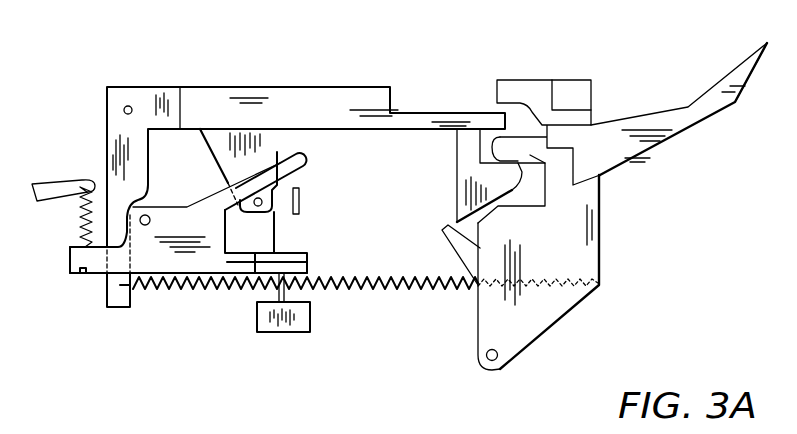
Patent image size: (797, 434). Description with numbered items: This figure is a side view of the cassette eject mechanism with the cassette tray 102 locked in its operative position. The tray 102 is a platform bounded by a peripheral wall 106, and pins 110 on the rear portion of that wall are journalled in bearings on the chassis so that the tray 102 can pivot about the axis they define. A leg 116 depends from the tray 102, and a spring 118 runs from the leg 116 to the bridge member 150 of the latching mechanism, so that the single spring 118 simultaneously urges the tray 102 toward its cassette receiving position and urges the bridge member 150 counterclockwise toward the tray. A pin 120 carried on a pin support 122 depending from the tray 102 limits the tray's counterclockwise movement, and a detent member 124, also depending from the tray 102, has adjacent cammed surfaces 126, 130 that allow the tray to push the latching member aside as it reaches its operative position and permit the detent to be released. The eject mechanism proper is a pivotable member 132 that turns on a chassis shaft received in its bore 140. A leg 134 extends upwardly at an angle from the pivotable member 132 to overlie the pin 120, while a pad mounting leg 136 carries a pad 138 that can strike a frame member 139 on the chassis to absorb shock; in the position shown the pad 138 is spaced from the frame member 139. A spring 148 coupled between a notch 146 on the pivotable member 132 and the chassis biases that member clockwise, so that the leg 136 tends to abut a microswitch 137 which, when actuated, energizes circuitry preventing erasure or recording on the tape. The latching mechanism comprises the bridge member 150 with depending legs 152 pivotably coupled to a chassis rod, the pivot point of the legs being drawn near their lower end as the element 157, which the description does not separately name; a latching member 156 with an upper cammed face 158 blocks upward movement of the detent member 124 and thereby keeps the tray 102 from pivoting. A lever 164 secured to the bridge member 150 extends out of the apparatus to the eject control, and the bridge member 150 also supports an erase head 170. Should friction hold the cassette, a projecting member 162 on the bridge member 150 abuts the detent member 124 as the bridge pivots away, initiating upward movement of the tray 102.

The cassette tray 102 is at (353, 82).
The peripheral wall 106 is at (285, 105).
The pins 110 is at (124, 110).
The leg 116 is at (107, 142).
The spring 118 is at (376, 290).
The pin 120 is at (256, 214).
The pin support 122 is at (270, 150).
The detent member 124 is at (459, 186).
The cammed surface 126 is at (508, 192).
The cammed surface 130 is at (522, 170).
The pivotable member 132 is at (155, 265).
The leg 134 is at (225, 185).
The pad mounting leg 136 is at (300, 267).
The microswitch 137 is at (268, 334).
The pad 138 is at (292, 253).
The frame member 139 is at (300, 200).
The bore 140 is at (150, 216).
The notch 146 is at (82, 275).
The spring 148 is at (80, 220).
The bridge member 150 is at (613, 108).
The depending legs 152 is at (582, 266).
The latching member 156 is at (530, 155).
The pivot hole 157 is at (498, 357).
The upper cammed face 158 is at (500, 148).
The projecting member 162 is at (452, 250).
The lever 164 is at (682, 120).
The erase head 170 is at (525, 78).